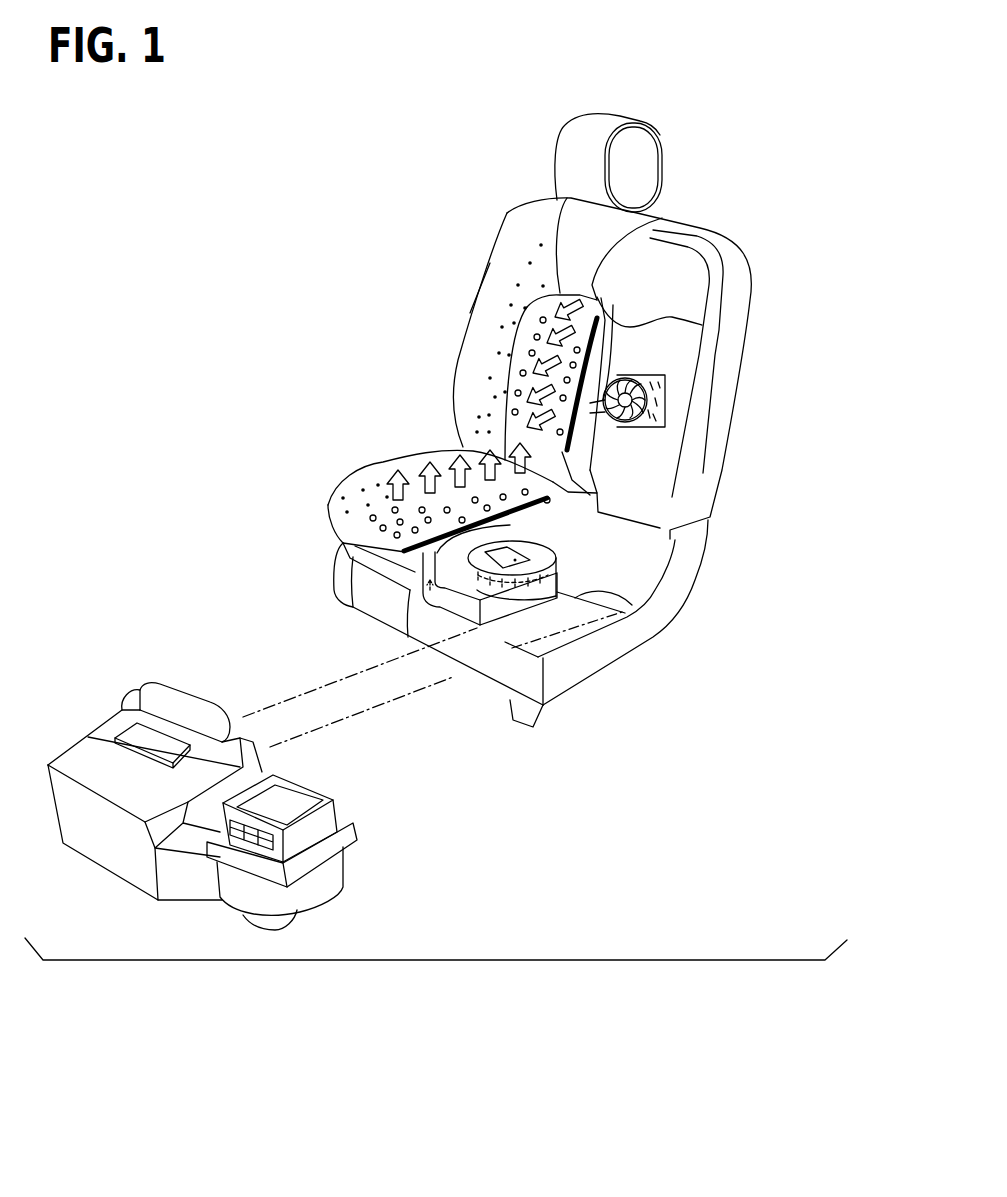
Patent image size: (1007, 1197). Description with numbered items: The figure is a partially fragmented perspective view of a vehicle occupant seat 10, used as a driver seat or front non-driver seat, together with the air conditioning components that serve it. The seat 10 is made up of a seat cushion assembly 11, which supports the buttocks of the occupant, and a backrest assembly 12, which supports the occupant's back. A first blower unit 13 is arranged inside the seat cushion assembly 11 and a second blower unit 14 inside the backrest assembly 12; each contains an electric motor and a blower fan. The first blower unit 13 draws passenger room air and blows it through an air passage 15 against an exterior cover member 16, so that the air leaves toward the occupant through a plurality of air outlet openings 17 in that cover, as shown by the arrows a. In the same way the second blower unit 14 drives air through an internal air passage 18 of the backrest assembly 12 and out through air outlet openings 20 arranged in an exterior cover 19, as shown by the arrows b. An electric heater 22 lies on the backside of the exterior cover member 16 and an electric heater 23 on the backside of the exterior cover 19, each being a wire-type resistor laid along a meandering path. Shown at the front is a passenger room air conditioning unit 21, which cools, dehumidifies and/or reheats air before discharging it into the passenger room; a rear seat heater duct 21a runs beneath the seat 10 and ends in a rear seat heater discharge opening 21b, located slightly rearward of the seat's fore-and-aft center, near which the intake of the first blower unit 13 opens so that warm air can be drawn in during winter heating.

The vehicle occupant seat 10 is at (745, 402).
The seat cushion assembly 11 is at (338, 470).
The backrest assembly 12 is at (480, 262).
The first blower unit 13 is at (570, 557).
The second blower unit 14 is at (660, 360).
The air passage 15 is at (420, 562).
The exterior cover member 16 is at (366, 470).
The air outlet openings 17 is at (347, 513).
The internal air passage 18 is at (578, 420).
The exterior cover 19 is at (480, 347).
The air outlet openings 20 is at (513, 327).
The passenger room air conditioning unit 21 is at (281, 764).
The rear seat heater duct 21a is at (450, 678).
The rear seat heater discharge opening 21b is at (667, 622).
The electric heater 22 is at (403, 550).
The electric heater 23 is at (595, 315).
The arrows a is at (443, 457).
The arrows b is at (547, 303).